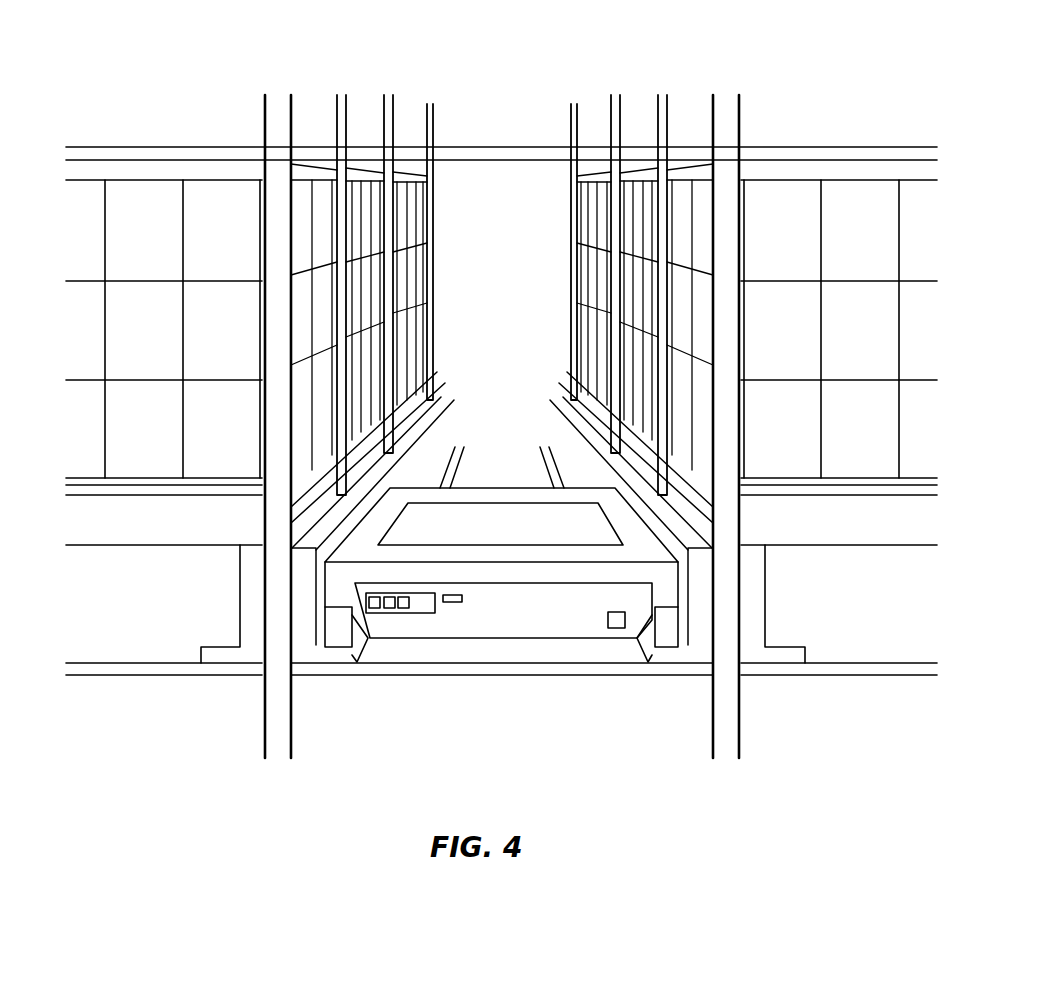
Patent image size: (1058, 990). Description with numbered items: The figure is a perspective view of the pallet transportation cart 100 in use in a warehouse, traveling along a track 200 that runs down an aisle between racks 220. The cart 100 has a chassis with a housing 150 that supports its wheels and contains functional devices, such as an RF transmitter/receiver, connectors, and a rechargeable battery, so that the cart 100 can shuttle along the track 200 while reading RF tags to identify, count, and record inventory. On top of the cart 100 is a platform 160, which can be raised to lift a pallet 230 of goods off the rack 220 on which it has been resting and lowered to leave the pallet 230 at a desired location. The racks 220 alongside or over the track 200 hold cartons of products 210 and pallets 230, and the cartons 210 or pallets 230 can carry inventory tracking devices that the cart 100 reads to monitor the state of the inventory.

The pallet transportation cart 100 is at (489, 655).
The housing 150 is at (407, 480).
The platform 160 is at (477, 512).
The track 200 is at (304, 603).
The cartons of products 210 is at (213, 432).
The racks 220 is at (458, 225).
The pallet 230 is at (178, 518).